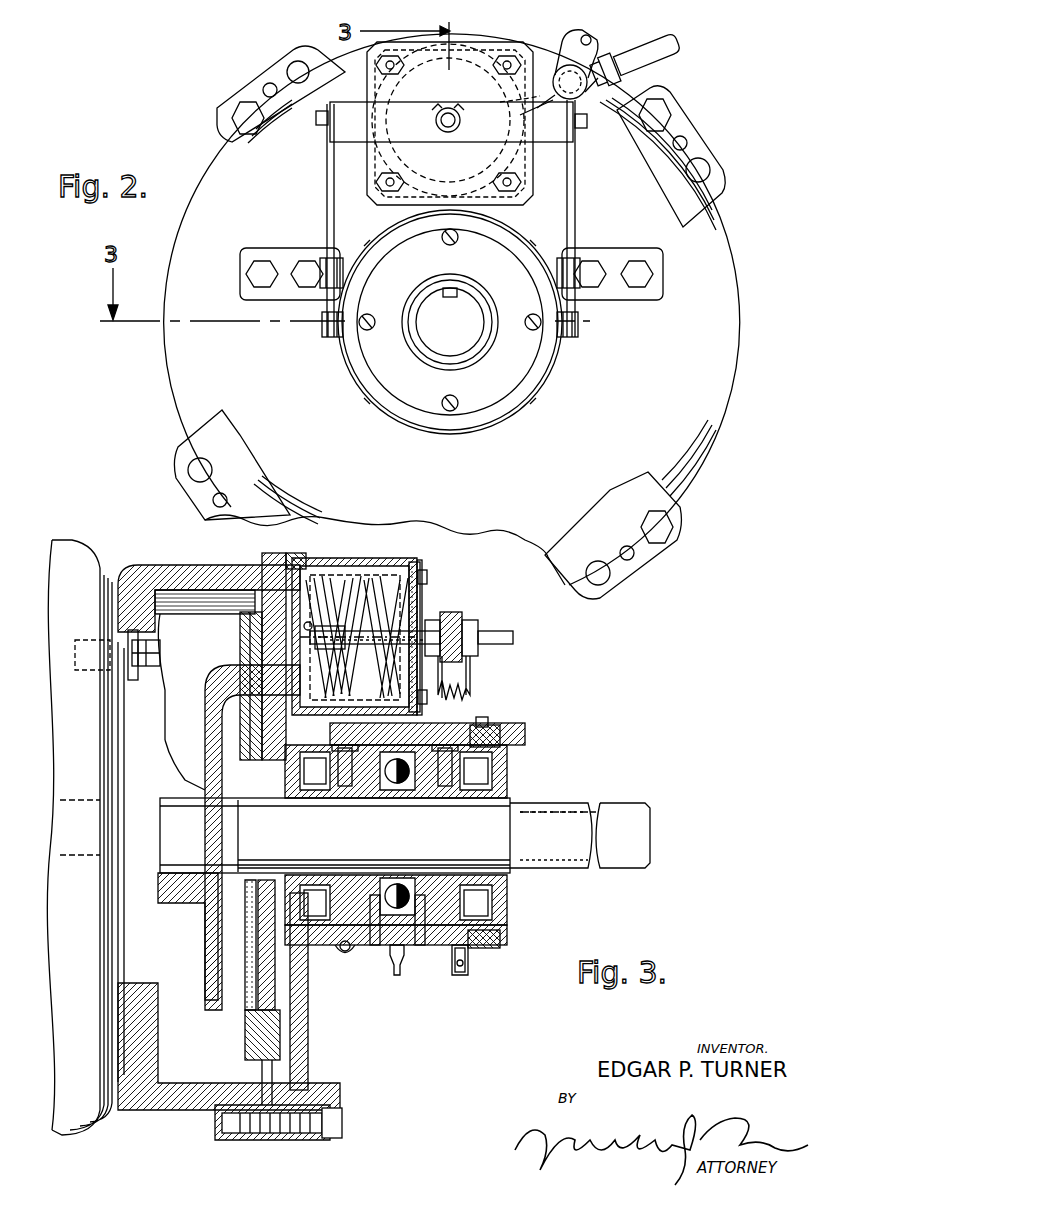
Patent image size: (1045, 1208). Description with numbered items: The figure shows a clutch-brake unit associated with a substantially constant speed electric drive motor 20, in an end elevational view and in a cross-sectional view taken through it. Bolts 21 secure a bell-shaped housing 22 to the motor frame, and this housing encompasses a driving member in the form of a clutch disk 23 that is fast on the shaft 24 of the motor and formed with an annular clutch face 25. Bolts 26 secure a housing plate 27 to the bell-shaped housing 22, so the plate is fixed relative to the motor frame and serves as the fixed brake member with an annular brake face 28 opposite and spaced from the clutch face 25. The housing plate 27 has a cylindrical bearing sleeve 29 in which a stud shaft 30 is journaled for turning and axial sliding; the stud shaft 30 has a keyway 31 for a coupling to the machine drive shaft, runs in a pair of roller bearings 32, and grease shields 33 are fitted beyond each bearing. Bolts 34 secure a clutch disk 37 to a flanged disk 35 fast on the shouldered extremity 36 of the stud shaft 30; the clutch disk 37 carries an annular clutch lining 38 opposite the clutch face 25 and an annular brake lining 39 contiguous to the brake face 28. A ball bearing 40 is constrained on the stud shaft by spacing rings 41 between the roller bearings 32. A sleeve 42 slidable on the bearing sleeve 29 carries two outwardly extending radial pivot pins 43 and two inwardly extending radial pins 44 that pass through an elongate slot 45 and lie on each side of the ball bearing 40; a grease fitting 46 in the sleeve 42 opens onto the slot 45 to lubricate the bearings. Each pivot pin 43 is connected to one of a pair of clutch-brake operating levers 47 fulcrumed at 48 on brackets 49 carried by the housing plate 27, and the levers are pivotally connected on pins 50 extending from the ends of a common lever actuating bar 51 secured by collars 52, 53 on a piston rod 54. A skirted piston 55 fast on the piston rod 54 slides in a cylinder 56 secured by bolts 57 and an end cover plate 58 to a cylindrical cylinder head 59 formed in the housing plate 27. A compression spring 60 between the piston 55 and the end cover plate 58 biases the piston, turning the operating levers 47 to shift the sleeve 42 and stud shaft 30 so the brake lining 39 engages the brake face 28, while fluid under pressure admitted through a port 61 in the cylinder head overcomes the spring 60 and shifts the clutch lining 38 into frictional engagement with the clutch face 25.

In FIG. 3, the electric drive motor 20 is at (68, 560).
In FIG. 3, the bolts 21 is at (152, 664).
In FIG. 3, the bell-shaped housing 22 is at (172, 570).
In FIG. 3, the clutch disk 23 is at (210, 698).
In FIG. 3, the shaft 24 is at (195, 872).
In FIG. 3, the annular clutch face 25 is at (250, 630).
In FIG. 2, the bolts 26 is at (228, 116).
In FIG. 3, the bolts 26 is at (342, 1122).
In FIG. 2, the housing plate 27 is at (690, 422).
In FIG. 3, the housing plate 27 is at (306, 1000).
In FIG. 3, the annular brake face 28 is at (262, 652).
In FIG. 3, the cylindrical bearing sleeve 29 is at (492, 746).
In FIG. 2, the stud shaft 30 is at (470, 340).
In FIG. 3, the stud shaft 30 is at (546, 856).
In FIG. 2, the keyway 31 is at (455, 290).
In FIG. 3, the keyway 31 is at (560, 808).
In FIG. 3, the roller bearings 32 is at (497, 772).
In FIG. 2, the grease shields 33 is at (483, 396).
In FIG. 3, the grease shields 33 is at (497, 784).
In FIG. 3, the bolts 34 is at (265, 808).
In FIG. 3, the flanged disk 35 is at (282, 878).
In FIG. 3, the shouldered extremity 36 is at (260, 840).
In FIG. 3, the clutch disk 37 is at (258, 940).
In FIG. 3, the annular clutch lining 38 is at (252, 606).
In FIG. 3, the annular brake lining 39 is at (268, 566).
In FIG. 3, the ball bearing 40 is at (397, 792).
In FIG. 3, the spacing rings 41 is at (366, 792).
In FIG. 3, the sleeve 42 is at (446, 732).
In FIG. 2, the radial pivot pins 43 is at (322, 330).
In FIG. 3, the radial pivot pins 43 is at (460, 960).
In FIG. 3, the radial pins 44 is at (376, 932).
In FIG. 3, the elongate slot 45 is at (345, 946).
In FIG. 3, the grease fitting 46 is at (397, 968).
In FIG. 2, the clutch-brake operating levers 47 is at (328, 186).
In FIG. 3, the clutch-brake operating levers 47 is at (472, 680).
In FIG. 2, the fulcrum 48 is at (340, 258).
In FIG. 2, the brackets 49 is at (283, 250).
In FIG. 2, the pins 50 is at (320, 126).
In FIG. 3, the pins 50 is at (476, 630).
In FIG. 3, the lever actuating bar 51 is at (455, 622).
In FIG. 2, the collar 52 is at (436, 120).
In FIG. 3, the collar 52 is at (486, 634).
In FIG. 3, the collar 53 is at (432, 628).
In FIG. 2, the piston rod 54 is at (452, 113).
In FIG. 3, the piston rod 54 is at (514, 638).
In FIG. 3, the skirted piston 55 is at (352, 565).
In FIG. 3, the cylinder 56 is at (386, 565).
In FIG. 2, the bolts 57 is at (502, 68).
In FIG. 3, the bolts 57 is at (426, 576).
In FIG. 2, the end cover plate 58 is at (507, 82).
In FIG. 3, the end cover plate 58 is at (418, 602).
In FIG. 3, the cylindrical cylinder head 59 is at (304, 560).
In FIG. 3, the compression spring 60 is at (410, 568).
In FIG. 2, the port 61 is at (510, 104).
In FIG. 3, the port 61 is at (306, 622).